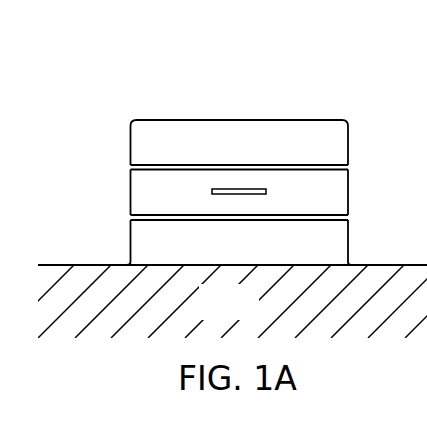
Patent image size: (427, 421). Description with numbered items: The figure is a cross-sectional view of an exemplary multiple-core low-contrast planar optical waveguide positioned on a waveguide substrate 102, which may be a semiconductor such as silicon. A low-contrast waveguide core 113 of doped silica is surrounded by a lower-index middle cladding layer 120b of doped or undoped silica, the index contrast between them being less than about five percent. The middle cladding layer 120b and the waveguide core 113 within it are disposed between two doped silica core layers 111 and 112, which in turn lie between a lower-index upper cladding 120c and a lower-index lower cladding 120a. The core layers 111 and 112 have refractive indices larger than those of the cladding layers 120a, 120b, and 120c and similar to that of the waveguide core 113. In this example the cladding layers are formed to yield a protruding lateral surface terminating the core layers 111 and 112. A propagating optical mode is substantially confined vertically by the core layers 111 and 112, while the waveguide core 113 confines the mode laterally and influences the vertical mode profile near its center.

The waveguide substrate 102 is at (253, 312).
The core layer 111 is at (292, 217).
The core layer 112 is at (207, 168).
The waveguide core 113 is at (239, 190).
The lower cladding 120a is at (163, 249).
The middle cladding layer 120b is at (152, 202).
The upper cladding 120c is at (148, 145).